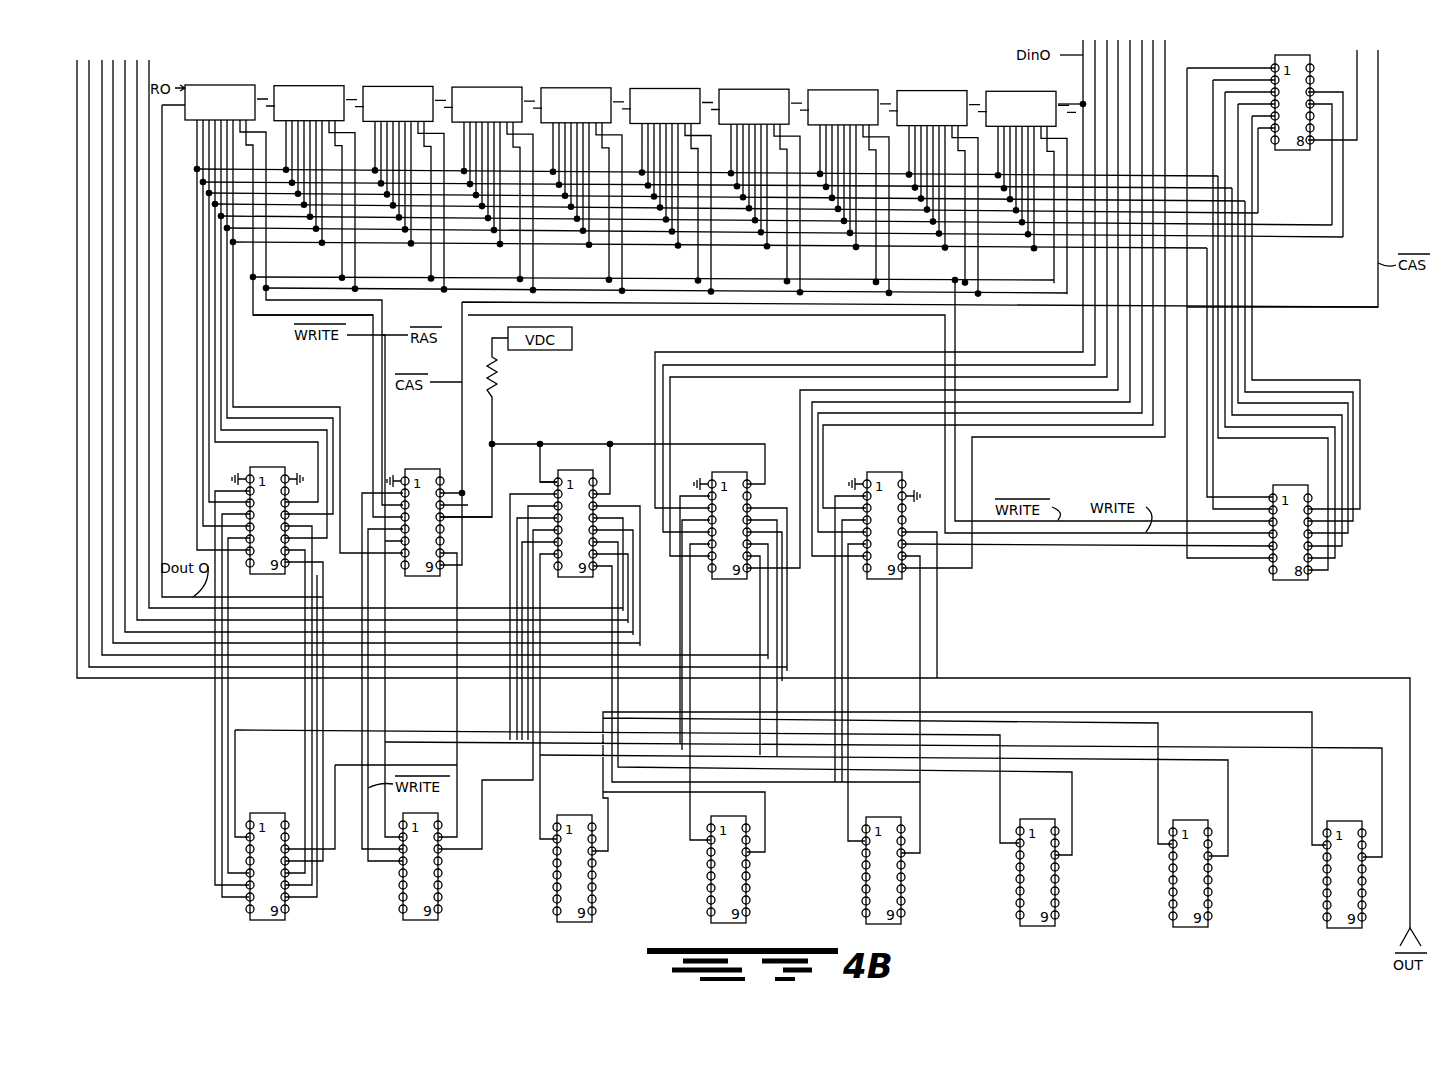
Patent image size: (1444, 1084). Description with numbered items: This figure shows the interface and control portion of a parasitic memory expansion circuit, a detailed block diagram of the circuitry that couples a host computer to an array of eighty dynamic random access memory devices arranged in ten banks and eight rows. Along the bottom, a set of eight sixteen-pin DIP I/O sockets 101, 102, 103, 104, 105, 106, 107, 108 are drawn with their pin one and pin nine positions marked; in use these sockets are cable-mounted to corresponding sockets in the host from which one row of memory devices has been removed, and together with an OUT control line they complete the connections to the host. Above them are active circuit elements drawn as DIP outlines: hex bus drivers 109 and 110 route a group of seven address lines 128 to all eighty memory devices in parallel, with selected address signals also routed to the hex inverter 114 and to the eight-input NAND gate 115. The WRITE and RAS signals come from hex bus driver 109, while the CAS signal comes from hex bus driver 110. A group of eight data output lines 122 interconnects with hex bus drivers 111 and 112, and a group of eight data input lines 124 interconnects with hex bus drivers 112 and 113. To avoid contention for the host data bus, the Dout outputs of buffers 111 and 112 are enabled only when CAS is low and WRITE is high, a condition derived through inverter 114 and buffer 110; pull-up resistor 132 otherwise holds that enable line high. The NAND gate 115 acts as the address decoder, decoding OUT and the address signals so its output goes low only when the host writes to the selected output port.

The I/O socket 101 is at (262, 922).
The I/O socket 102 is at (411, 922).
The I/O socket 103 is at (567, 923).
The I/O socket 104 is at (722, 923).
The I/O socket 105 is at (883, 924).
The I/O socket 106 is at (1033, 926).
The I/O socket 107 is at (1186, 927).
The I/O socket 108 is at (1352, 928).
The hex bus driver 109 is at (257, 572).
The hex bus driver 110 is at (412, 576).
The hex bus driver 111 is at (566, 577).
The hex bus driver 112 is at (720, 579).
The hex bus driver 113 is at (875, 579).
The hex inverter 114 is at (1283, 582).
The 8-input NAND gate 115 is at (1282, 150).
The data output lines 122 is at (167, 380).
The data input lines 124 is at (1042, 450).
The address lines 128 is at (241, 344).
The pull-up resistor 132 is at (498, 382).